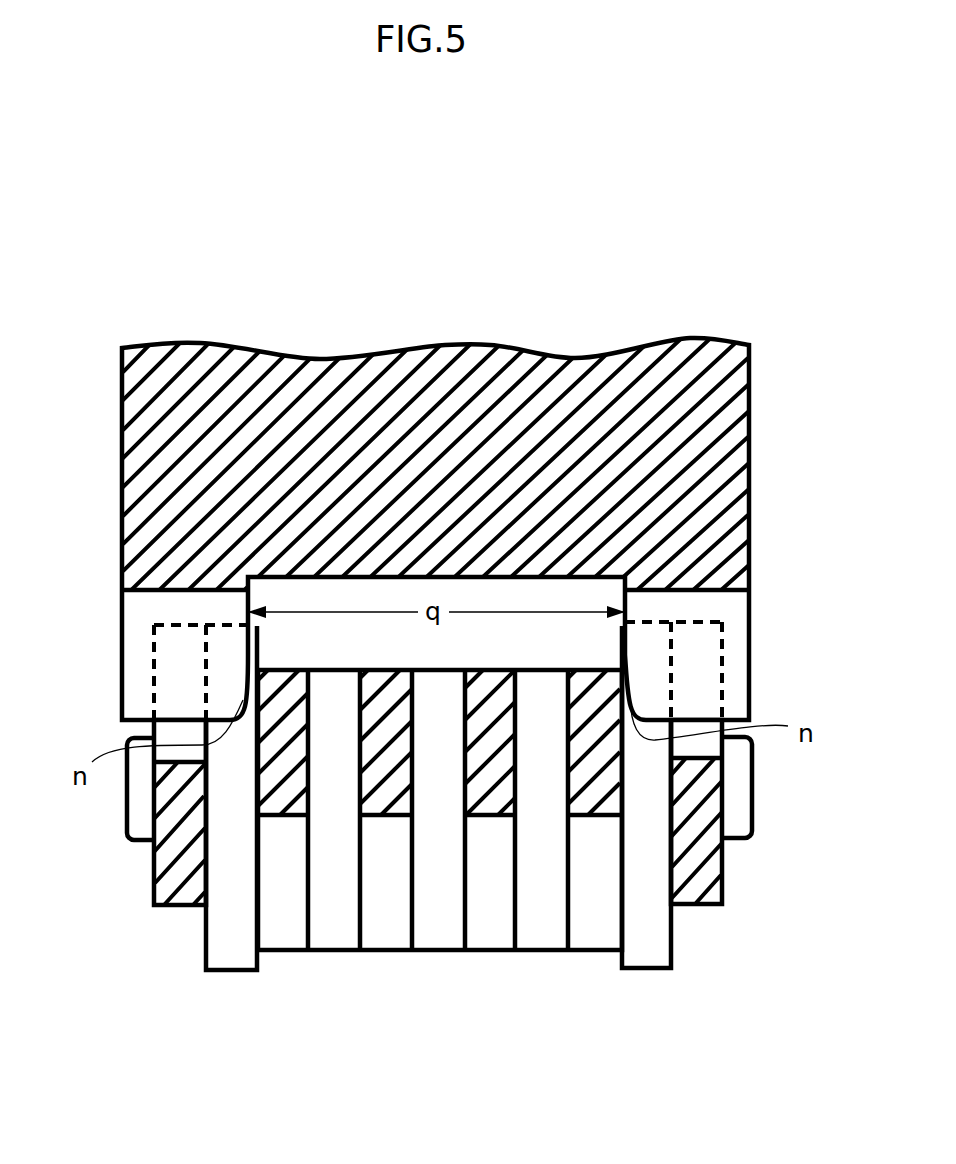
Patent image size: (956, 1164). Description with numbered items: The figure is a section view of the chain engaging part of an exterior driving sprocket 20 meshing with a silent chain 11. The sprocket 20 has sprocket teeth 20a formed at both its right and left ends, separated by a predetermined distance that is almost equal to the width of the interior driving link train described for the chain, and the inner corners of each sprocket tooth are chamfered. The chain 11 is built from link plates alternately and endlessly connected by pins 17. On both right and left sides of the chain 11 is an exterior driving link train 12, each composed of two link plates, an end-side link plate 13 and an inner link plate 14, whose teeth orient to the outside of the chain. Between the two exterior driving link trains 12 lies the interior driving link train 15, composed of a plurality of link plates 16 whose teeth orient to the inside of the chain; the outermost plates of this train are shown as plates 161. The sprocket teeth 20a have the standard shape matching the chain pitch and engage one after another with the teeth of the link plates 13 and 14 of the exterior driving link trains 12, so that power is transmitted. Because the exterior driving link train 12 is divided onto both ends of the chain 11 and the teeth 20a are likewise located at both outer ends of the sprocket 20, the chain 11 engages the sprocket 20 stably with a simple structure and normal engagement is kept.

The silent chain 11 is at (491, 871).
The exterior driving link train 12 is at (442, 871).
The end-side link plate 13 is at (180, 890).
The inner link plate 14 is at (437, 841).
The interior driving link train 15 is at (440, 892).
The interior driving link plate 16 is at (570, 1044).
The outer contact 161 is at (285, 952).
The pin 17 is at (744, 797).
The exterior driving sprocket 20 is at (143, 440).
The sprocket teeth 20a is at (122, 624).